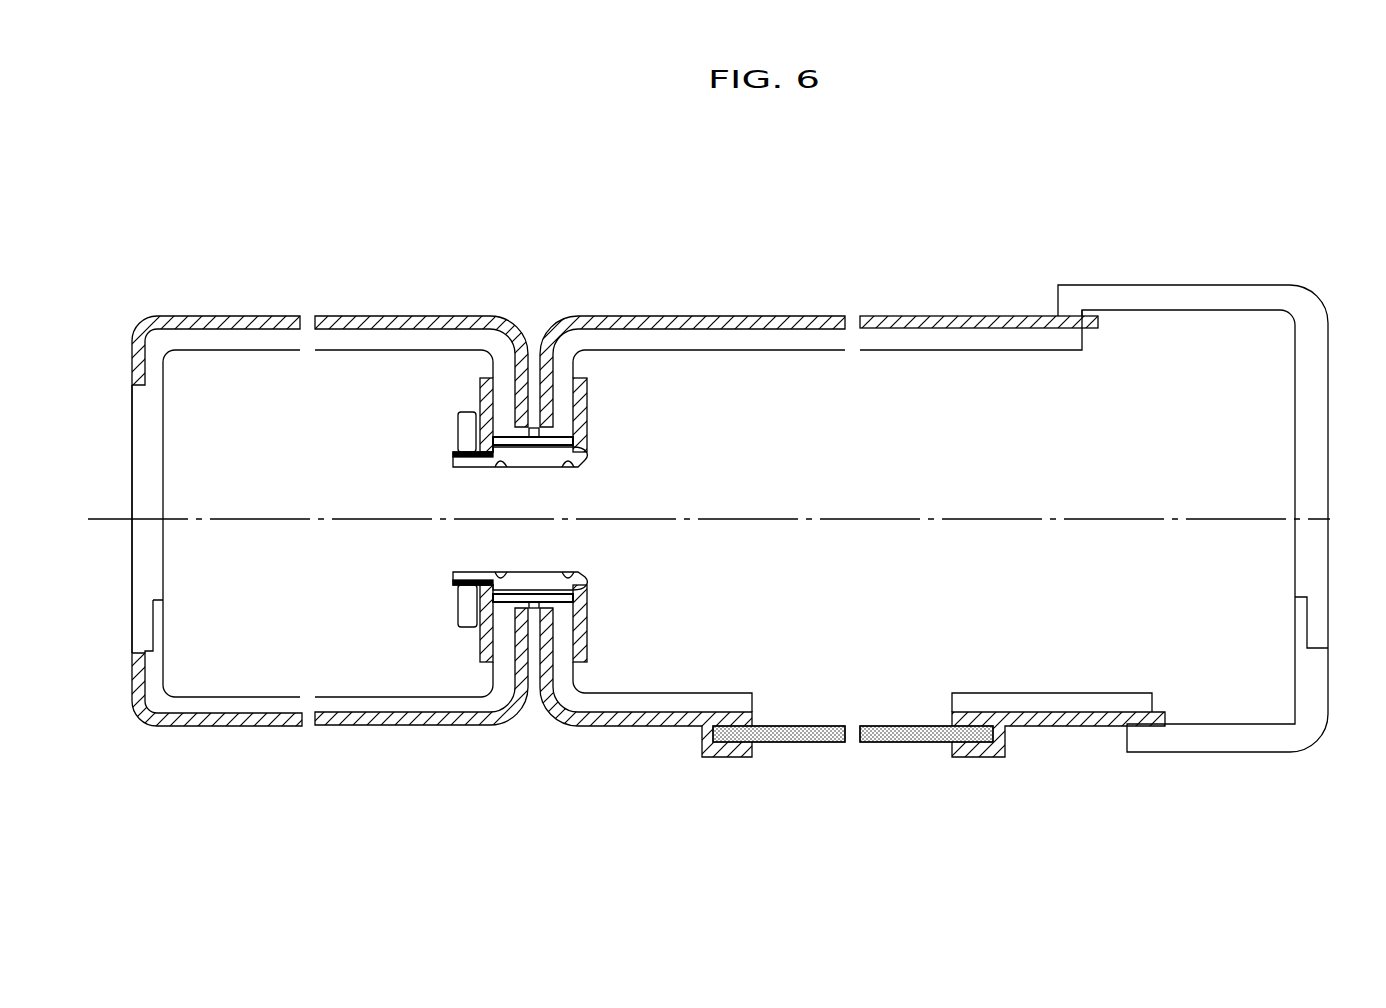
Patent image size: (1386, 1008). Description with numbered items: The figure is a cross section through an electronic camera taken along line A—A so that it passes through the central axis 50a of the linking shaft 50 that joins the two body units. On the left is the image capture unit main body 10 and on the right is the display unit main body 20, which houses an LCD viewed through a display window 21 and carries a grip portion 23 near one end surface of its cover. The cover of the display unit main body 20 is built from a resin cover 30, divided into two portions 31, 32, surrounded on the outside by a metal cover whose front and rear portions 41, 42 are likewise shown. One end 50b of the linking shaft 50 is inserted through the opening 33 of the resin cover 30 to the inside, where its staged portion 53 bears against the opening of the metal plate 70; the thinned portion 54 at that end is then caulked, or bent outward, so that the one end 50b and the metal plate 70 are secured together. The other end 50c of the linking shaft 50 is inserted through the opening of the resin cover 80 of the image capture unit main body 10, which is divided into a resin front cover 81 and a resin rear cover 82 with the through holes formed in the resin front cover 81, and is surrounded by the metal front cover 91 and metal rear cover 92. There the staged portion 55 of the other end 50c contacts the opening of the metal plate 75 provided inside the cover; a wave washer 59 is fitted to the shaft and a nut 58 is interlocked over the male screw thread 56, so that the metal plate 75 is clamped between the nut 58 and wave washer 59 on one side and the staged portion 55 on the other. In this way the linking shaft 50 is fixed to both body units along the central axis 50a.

The image capture unit main body 10 is at (330, 525).
The display unit main body 20 is at (852, 516).
The display window 21 is at (787, 743).
The grip portion 23 is at (1222, 305).
The resin cover 30 is at (943, 515).
The upper plate portion 31 is at (660, 348).
The lower plate portion 32 is at (623, 702).
The opening 33 is at (550, 580).
The upper wall 41 is at (983, 312).
The lower wall 42 is at (1048, 725).
The linking shaft 50 is at (557, 525).
The central axis 50a is at (820, 522).
The one end of the linking shaft 50b is at (566, 510).
The other end of the linking shaft 50c is at (475, 592).
The staged portion 53 is at (563, 467).
The thinned portion 54 is at (579, 518).
The staged portion 55 is at (500, 460).
The male screw thread 56 is at (455, 458).
The nut 58 is at (460, 613).
The wave washer 59 is at (478, 635).
The metal plate 70 is at (587, 400).
The metal plate 75 is at (480, 405).
The resin cover 80 is at (312, 526).
The resin front cover 81 is at (167, 587).
The resin rear cover 82 is at (177, 703).
The metal front cover 91 is at (217, 313).
The metal rear cover 92 is at (337, 728).